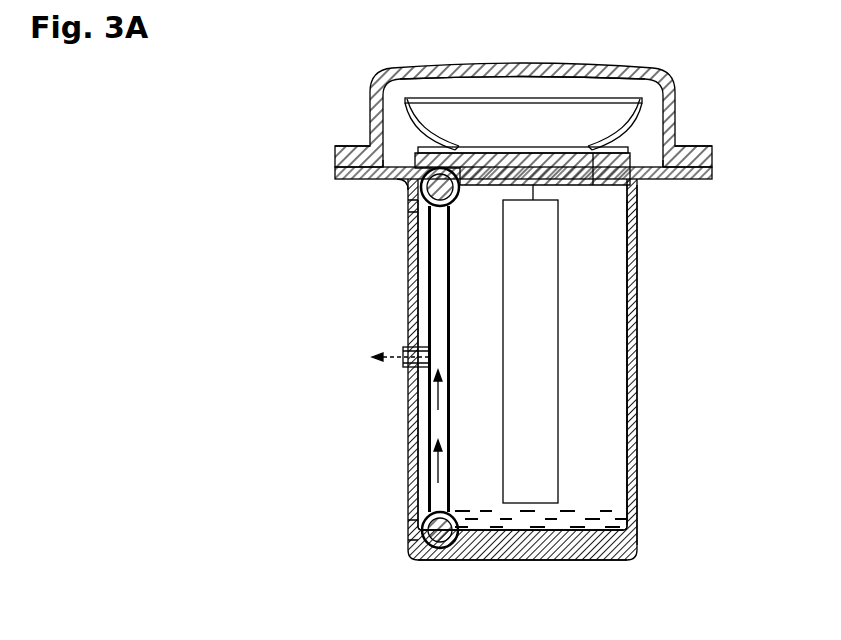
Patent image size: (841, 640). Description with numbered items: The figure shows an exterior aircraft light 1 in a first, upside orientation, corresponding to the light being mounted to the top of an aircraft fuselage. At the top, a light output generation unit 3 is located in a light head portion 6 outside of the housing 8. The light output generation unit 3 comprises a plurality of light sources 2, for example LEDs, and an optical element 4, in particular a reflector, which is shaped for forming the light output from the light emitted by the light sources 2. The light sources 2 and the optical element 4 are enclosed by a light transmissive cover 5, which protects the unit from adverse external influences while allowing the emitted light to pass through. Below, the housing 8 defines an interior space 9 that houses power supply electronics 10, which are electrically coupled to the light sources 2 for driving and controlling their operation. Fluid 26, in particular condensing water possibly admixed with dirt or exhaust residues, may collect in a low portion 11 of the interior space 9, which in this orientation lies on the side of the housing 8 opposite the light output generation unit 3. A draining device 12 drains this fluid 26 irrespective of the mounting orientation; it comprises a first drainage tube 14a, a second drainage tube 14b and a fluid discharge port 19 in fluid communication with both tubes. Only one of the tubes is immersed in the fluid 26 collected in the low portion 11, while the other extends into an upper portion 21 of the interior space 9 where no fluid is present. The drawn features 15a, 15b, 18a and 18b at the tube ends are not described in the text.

The exterior aircraft light 1 is at (305, 485).
The light source 2 is at (398, 140).
The light output generation unit 3 is at (516, 78).
The optical element 4 is at (589, 110).
The light transmissive cover 5 is at (467, 70).
The light head portion 6 is at (678, 68).
The housing 8 is at (668, 365).
The interior space 9 is at (610, 256).
The power supply electronics 10 is at (548, 293).
The low portion 11 is at (657, 517).
The draining device 12 is at (466, 490).
The first drainage tube 14a is at (464, 436).
The second drainage tube 14b is at (464, 286).
The lower wall opening 15a is at (400, 550).
The upper wall opening 15b is at (405, 222).
The lower seal ring 18a is at (421, 516).
The upper seal ring 18b is at (418, 206).
The fluid discharge port 19 is at (392, 380).
The upper portion 21 is at (657, 207).
The fluid 26 is at (622, 505).